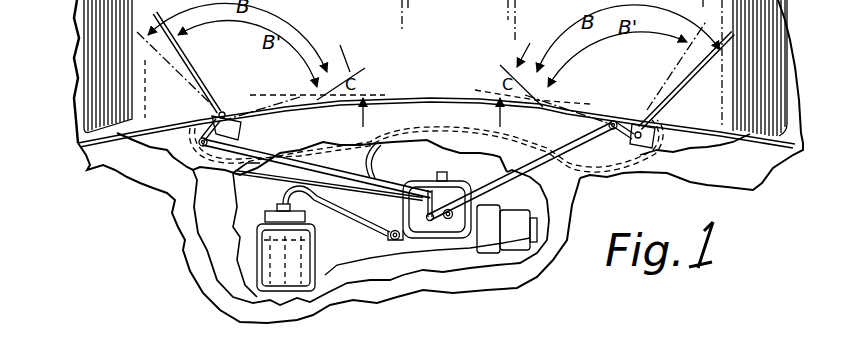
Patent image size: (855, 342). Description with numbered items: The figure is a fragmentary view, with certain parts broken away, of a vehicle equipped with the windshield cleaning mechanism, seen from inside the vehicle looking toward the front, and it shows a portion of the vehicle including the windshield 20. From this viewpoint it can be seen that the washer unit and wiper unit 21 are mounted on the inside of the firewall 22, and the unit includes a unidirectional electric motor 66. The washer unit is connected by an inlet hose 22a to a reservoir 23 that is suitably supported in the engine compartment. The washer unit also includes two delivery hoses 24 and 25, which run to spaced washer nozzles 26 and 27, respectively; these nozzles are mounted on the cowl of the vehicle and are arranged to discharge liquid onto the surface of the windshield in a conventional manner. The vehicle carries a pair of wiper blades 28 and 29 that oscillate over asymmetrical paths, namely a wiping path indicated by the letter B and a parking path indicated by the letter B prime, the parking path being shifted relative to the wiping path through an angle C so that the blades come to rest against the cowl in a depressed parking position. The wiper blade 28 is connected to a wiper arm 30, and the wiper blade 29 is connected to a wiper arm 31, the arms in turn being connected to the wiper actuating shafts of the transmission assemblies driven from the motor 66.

The windshield 20 is at (78, 144).
The washer unit and wiper unit 21 is at (427, 250).
The firewall 22 is at (565, 183).
The inlet hose 22a is at (323, 238).
The reservoir 23 is at (312, 215).
The delivery hose 24 is at (380, 164).
The delivery hose 25 is at (283, 175).
The washer nozzle 26 is at (670, 108).
The washer nozzle 27 is at (197, 104).
The wiper blade 28 is at (485, 90).
The wiper blade 29 is at (381, 91).
The wiper arm 30 is at (627, 107).
The wiper arm 31 is at (257, 120).
The unidirectional electric motor 66 is at (533, 257).